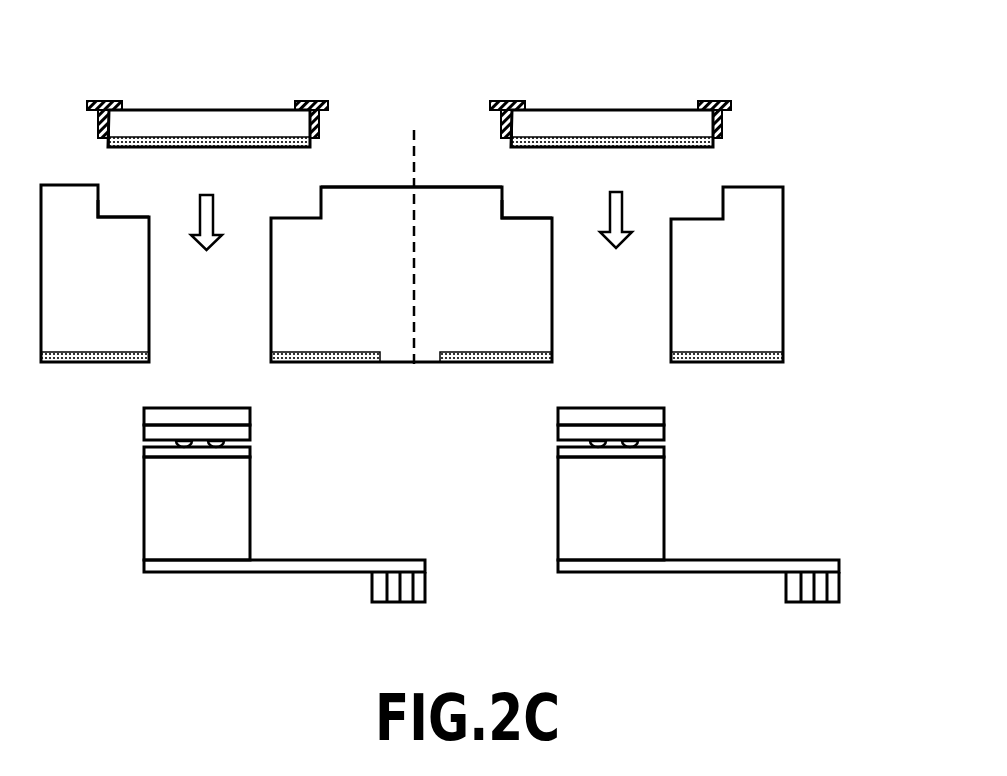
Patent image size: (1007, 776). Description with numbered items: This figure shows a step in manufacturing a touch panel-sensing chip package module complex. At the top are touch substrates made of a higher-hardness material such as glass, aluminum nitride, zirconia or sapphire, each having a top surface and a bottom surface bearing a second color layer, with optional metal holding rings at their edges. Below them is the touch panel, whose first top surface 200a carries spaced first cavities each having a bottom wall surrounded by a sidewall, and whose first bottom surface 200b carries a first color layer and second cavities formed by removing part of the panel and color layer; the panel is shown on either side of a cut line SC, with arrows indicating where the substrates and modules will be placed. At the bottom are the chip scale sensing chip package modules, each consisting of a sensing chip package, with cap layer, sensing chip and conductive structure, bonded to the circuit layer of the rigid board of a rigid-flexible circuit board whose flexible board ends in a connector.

The first top surface 200a is at (430, 184).
The first bottom surface 200b is at (393, 355).
The scribe / cut line SC is at (411, 229).